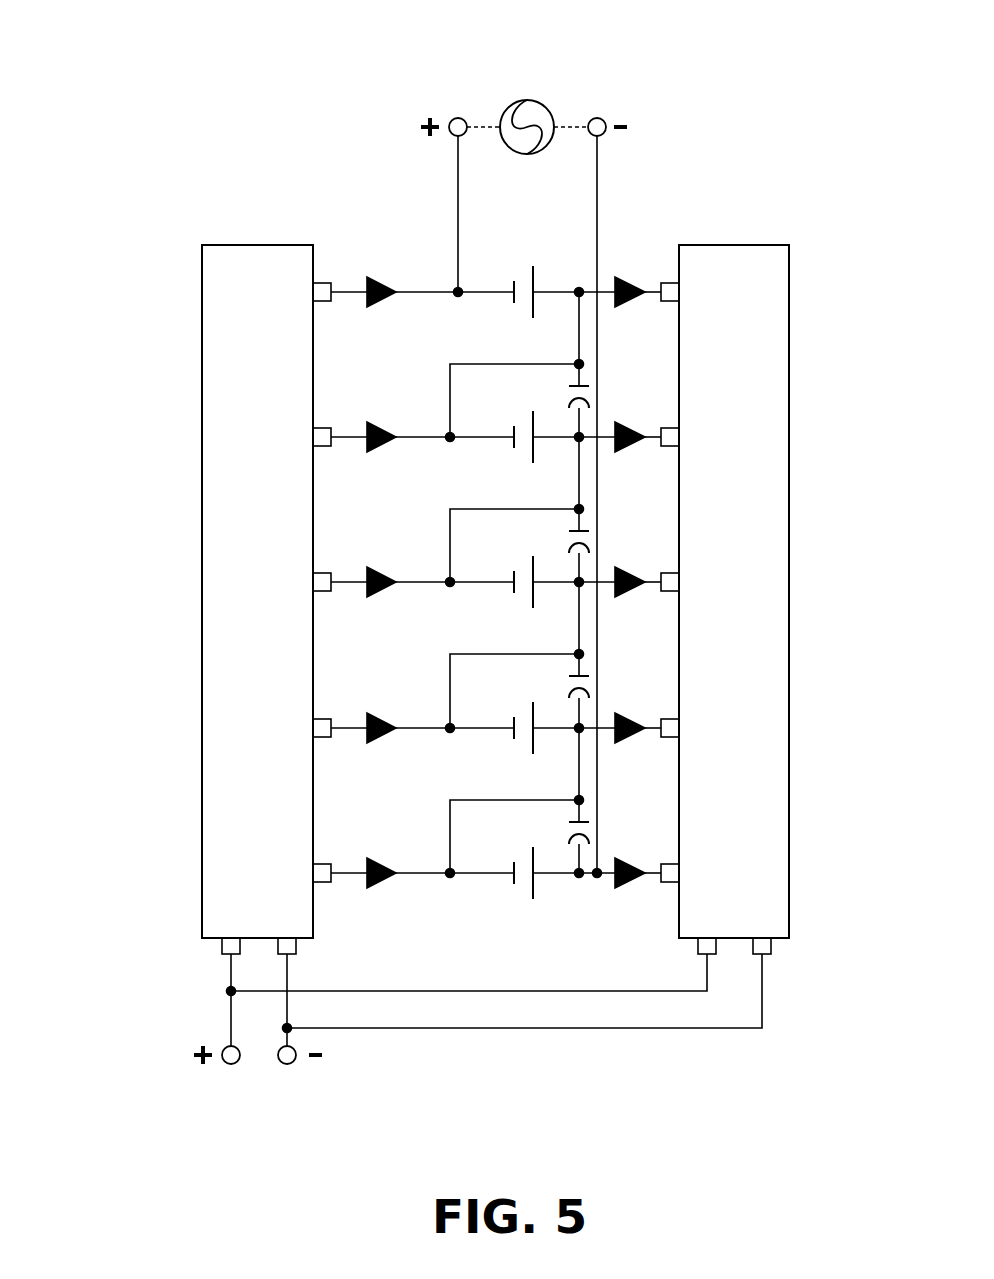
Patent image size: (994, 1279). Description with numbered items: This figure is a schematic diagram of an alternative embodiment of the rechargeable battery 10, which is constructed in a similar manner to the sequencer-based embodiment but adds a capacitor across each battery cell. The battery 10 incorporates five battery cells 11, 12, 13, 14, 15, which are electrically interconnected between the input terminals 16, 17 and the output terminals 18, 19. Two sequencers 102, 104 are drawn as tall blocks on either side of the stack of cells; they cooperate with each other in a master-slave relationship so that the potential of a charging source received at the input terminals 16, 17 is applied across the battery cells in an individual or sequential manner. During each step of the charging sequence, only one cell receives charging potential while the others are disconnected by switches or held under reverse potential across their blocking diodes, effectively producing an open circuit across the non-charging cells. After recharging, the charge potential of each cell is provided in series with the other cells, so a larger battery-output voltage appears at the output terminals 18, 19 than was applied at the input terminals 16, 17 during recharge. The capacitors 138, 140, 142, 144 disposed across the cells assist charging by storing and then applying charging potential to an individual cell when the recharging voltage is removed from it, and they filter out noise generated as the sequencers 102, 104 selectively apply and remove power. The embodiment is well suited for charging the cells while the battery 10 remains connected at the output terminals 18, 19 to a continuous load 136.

The rechargeable battery 10 is at (184, 94).
The battery cell 11 is at (543, 874).
The battery cell 12 is at (543, 729).
The battery cell 13 is at (543, 583).
The battery cell 14 is at (543, 438).
The battery cell 15 is at (543, 293).
The input terminal 16 is at (287, 1064).
The input terminal 17 is at (232, 1064).
The output terminal 18 is at (597, 118).
The output terminal 19 is at (458, 118).
The sequencer 102 is at (202, 590).
The sequencer 104 is at (789, 592).
The load 136 is at (525, 100).
The capacitor 138 is at (582, 815).
The capacitor 140 is at (582, 669).
The capacitor 142 is at (582, 524).
The capacitor 144 is at (582, 379).